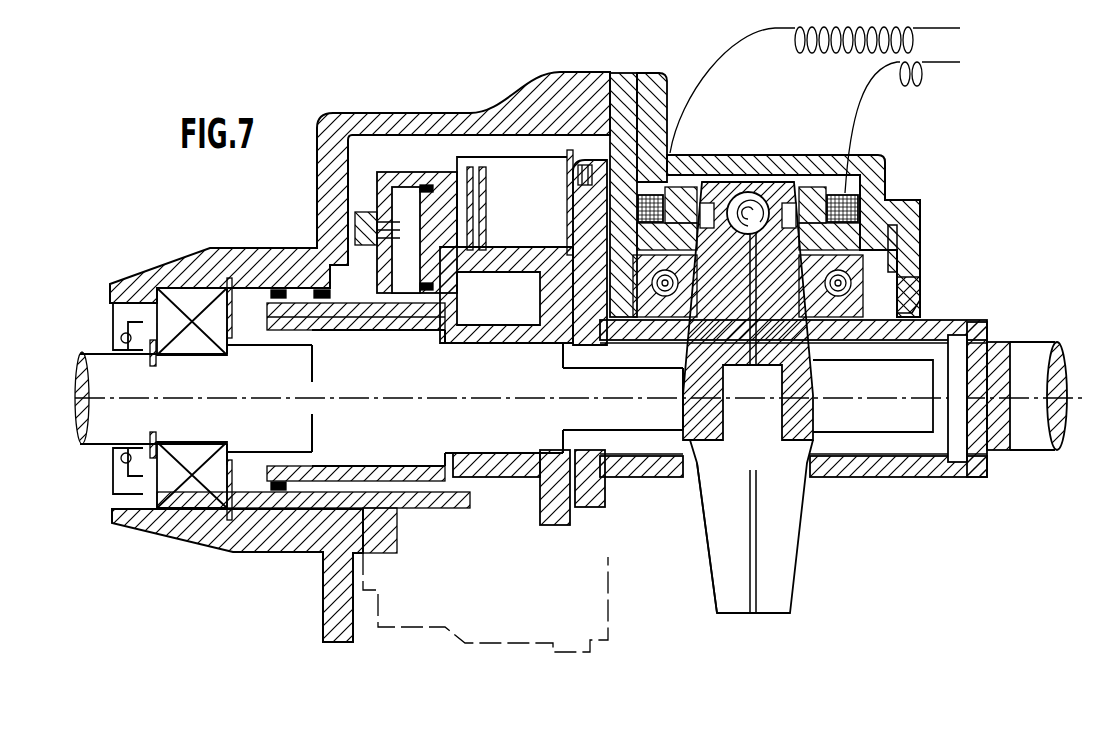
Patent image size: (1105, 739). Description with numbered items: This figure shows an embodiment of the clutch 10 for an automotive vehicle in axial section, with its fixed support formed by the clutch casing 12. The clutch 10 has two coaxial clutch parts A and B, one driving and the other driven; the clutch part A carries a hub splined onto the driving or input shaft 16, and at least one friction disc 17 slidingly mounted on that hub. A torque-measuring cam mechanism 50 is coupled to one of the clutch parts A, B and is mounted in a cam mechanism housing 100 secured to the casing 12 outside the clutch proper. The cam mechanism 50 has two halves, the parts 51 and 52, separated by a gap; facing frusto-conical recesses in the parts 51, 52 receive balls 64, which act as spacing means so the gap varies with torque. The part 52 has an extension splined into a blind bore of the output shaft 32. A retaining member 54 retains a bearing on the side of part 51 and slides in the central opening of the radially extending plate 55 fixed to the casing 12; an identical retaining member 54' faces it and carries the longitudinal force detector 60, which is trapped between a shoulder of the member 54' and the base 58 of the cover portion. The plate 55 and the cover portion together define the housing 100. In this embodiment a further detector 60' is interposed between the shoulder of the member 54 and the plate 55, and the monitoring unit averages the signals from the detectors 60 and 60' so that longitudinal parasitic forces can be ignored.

The clutch 10 is at (424, 170).
The clutch casing 12 is at (207, 247).
The input shaft 16 is at (105, 432).
The friction disc 17 is at (490, 250).
The output shaft 32 is at (995, 365).
The cam mechanism 50 is at (803, 598).
The cam mechanism part 51 is at (725, 540).
The cam mechanism part 52 is at (768, 507).
The retaining member 54 is at (523, 342).
The retaining member 54' is at (935, 248).
The radially extending plate 55 is at (648, 93).
The base 58 is at (917, 249).
The longitudinal force detector 60 is at (831, 208).
The further detector 60' is at (673, 208).
The balls 64 is at (750, 205).
The cam mechanism housing 100 is at (893, 155).
The clutch part A is at (520, 482).
The clutch part B is at (642, 483).